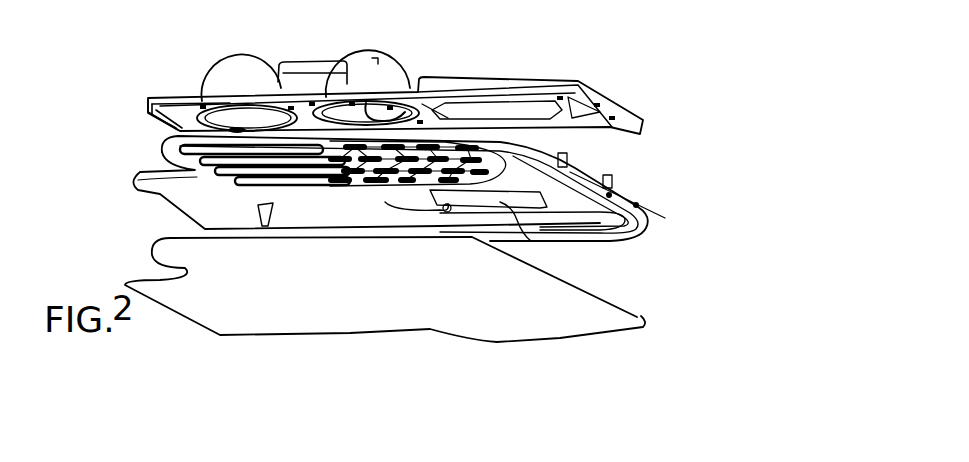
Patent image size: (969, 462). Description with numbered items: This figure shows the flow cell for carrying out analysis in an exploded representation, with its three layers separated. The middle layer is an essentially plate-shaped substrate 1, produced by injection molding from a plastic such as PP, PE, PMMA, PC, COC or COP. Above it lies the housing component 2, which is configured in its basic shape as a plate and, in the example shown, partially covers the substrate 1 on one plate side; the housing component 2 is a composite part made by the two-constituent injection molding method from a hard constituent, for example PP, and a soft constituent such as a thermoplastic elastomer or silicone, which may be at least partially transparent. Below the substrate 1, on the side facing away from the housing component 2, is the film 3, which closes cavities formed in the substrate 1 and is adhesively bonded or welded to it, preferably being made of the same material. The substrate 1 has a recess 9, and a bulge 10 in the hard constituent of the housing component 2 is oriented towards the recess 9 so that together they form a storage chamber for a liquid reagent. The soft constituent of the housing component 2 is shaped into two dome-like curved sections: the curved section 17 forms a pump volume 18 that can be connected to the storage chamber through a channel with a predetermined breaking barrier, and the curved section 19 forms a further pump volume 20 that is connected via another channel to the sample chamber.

The substrate 1 is at (152, 198).
The housing component 2 is at (159, 102).
The film 3 is at (640, 309).
The recess 9 is at (600, 242).
The bulge 10 is at (523, 76).
The curved section 17 is at (376, 58).
The pump volume 18 is at (383, 118).
The curved section 19 is at (279, 68).
The pump volume 20 is at (168, 120).